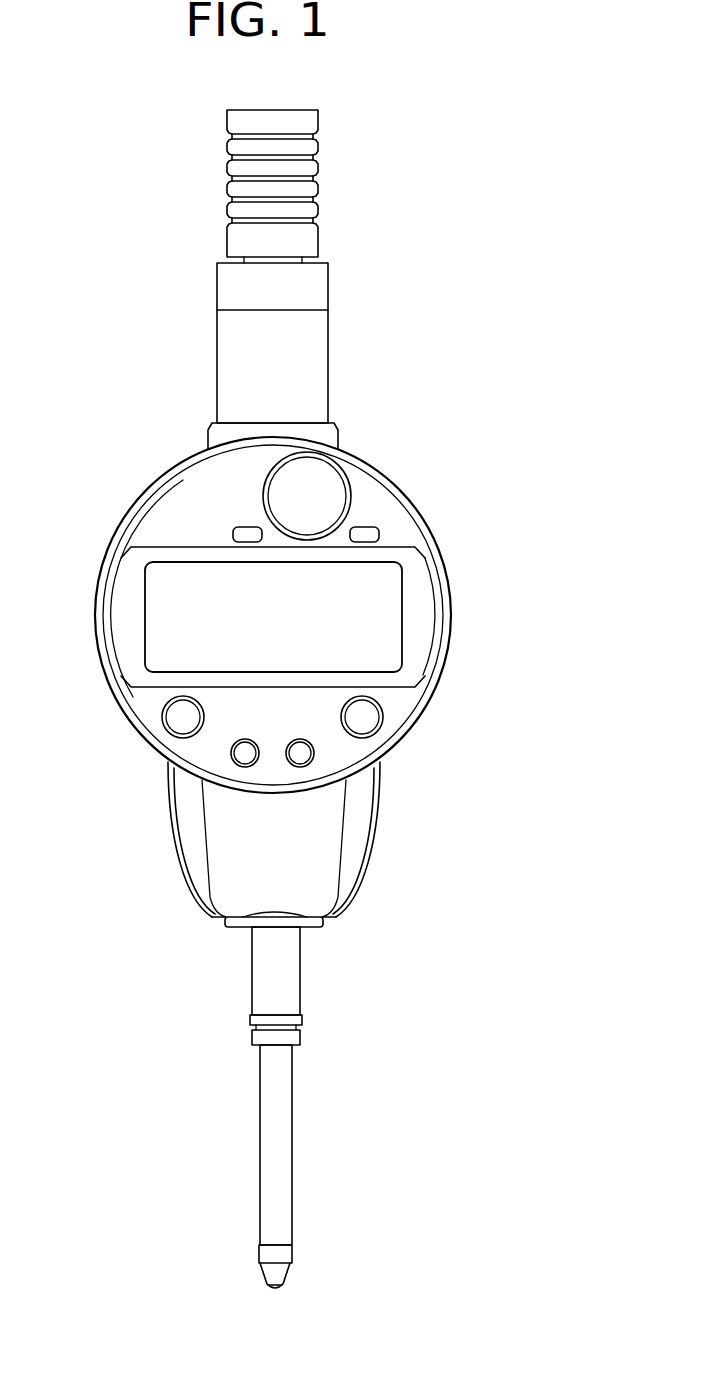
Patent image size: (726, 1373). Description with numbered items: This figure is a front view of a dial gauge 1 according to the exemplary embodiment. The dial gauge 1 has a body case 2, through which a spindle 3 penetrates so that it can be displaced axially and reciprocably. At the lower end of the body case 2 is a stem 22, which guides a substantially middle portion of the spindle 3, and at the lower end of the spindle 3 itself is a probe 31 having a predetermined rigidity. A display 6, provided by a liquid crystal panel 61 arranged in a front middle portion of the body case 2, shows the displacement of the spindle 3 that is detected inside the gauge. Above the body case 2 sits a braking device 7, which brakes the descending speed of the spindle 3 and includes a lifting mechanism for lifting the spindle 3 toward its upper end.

The dial gauge 1 is at (449, 283).
The body case 2 is at (152, 487).
The spindle 3 is at (290, 1143).
The display 6 is at (123, 624).
The braking device 7 is at (228, 283).
The stem 22 is at (290, 984).
The probe 31 is at (292, 1270).
The liquid crystal panel 61 is at (157, 657).